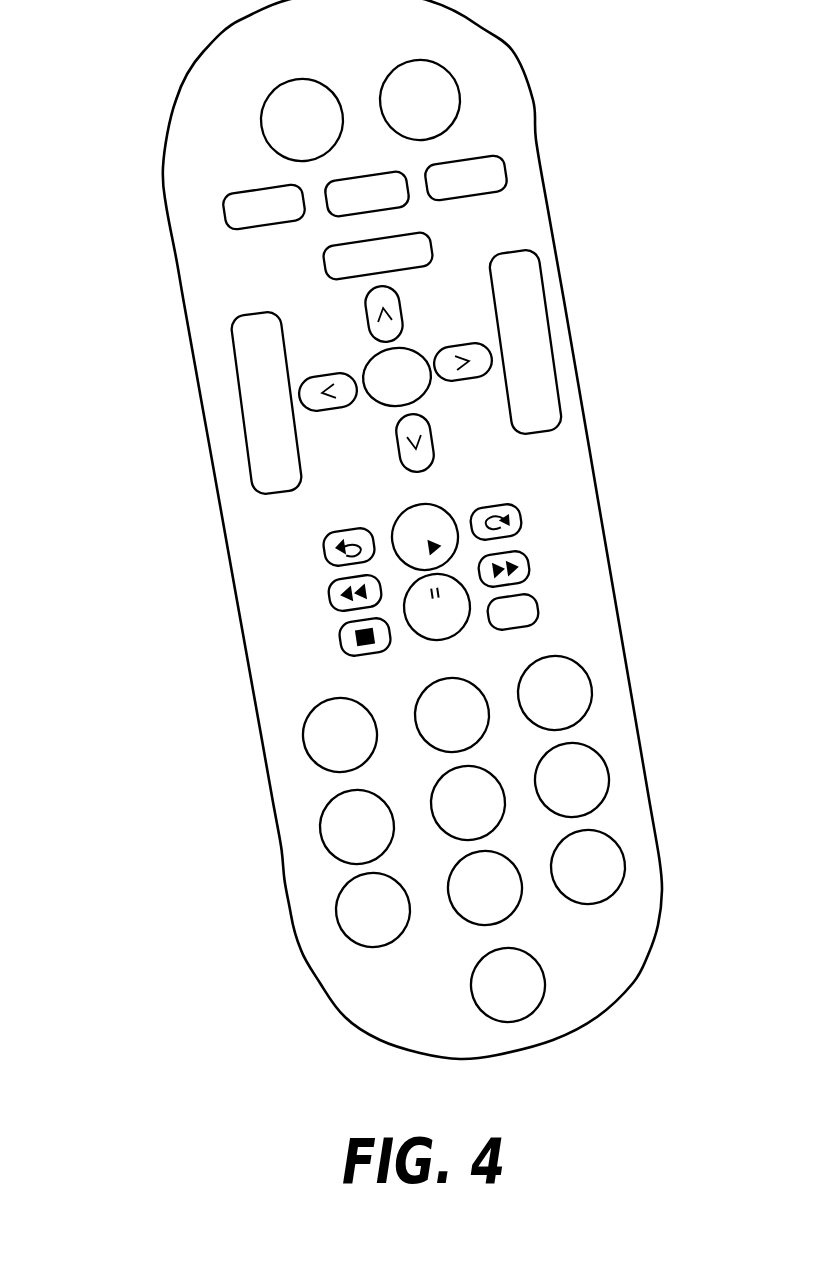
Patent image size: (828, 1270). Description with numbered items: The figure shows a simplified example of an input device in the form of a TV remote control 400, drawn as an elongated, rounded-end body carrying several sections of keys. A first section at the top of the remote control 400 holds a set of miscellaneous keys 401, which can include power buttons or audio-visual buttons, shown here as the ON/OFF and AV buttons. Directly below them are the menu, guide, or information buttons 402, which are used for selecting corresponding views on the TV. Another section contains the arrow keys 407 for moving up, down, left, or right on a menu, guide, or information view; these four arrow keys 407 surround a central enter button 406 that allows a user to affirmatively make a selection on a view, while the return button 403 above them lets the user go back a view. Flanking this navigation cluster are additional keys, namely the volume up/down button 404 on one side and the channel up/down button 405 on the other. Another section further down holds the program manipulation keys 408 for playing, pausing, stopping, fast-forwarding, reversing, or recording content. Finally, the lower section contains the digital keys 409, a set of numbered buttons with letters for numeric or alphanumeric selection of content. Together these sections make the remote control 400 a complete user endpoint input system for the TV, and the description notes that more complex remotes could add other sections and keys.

The TV remote control 400 is at (200, 54).
The set of miscellaneous keys 401 is at (146, 115).
The menu, guide, or information buttons 402 is at (159, 191).
The return button 403 is at (324, 266).
The volume up/down button 404 is at (243, 396).
The channel up/down button 405 is at (551, 345).
The enter button 406 is at (387, 406).
The arrow keys 407 is at (397, 294).
The program manipulation keys 408 is at (217, 549).
The digital keys 409 is at (243, 702).